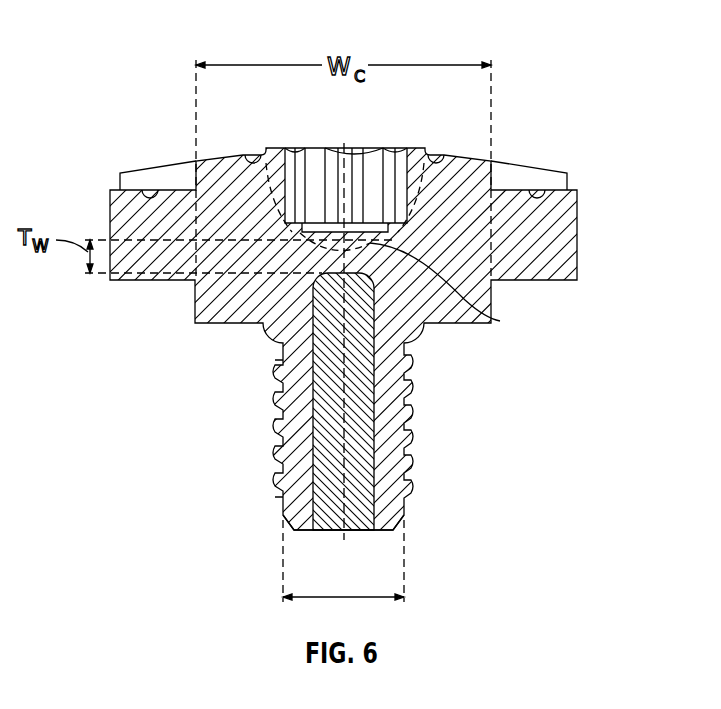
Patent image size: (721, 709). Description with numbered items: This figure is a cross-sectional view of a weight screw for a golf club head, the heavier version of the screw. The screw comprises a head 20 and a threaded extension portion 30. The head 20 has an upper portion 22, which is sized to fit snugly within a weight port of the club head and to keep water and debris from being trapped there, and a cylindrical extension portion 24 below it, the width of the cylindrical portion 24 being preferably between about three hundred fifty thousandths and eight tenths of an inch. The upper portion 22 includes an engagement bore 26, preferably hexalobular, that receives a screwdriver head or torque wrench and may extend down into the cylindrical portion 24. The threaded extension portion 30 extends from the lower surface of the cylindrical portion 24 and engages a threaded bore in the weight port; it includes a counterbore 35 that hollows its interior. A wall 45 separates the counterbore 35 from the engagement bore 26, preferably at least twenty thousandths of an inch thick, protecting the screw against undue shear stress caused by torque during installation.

The head 20 is at (112, 302).
The upper portion 22 is at (578, 236).
The cylindrical extension portion 24 is at (193, 306).
The engagement bore 26 is at (341, 159).
The threaded extension portion 30 is at (280, 462).
The counterbore 35 is at (357, 528).
The wall 45 is at (500, 321).